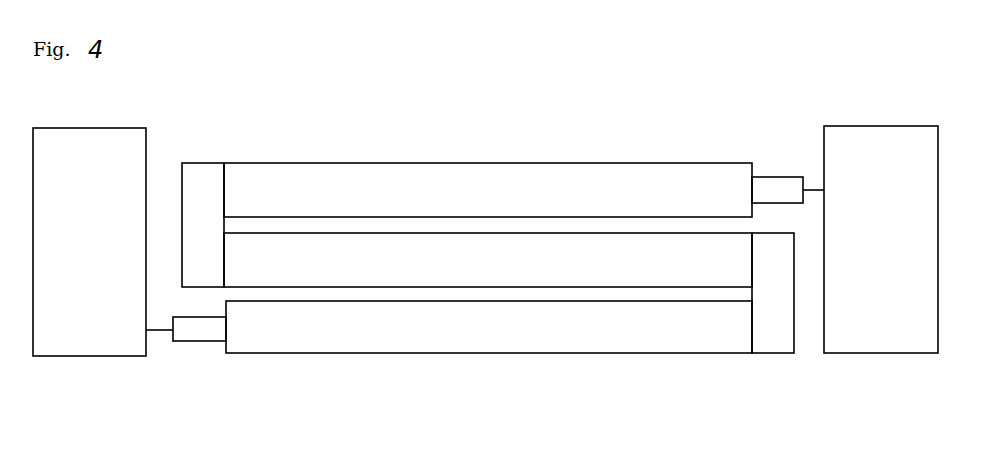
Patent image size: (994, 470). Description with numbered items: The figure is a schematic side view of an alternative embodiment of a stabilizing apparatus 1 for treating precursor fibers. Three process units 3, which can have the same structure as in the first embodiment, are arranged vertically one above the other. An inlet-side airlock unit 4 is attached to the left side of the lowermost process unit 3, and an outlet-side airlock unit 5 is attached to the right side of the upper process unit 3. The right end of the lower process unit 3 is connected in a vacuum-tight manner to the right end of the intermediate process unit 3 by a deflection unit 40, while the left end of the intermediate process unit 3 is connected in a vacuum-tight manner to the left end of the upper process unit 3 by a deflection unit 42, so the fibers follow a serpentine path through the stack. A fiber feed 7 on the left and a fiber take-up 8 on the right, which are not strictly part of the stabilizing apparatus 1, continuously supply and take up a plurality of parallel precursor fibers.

The stabilizing apparatus 1 is at (728, 91).
The process unit 3 is at (307, 163).
The inlet-side airlock unit 4 is at (190, 343).
The outlet-side airlock unit 5 is at (771, 177).
The fiber feed 7 is at (133, 127).
The fiber take-up 8 is at (856, 126).
The deflection unit 40 is at (780, 355).
The deflection unit 42 is at (207, 163).